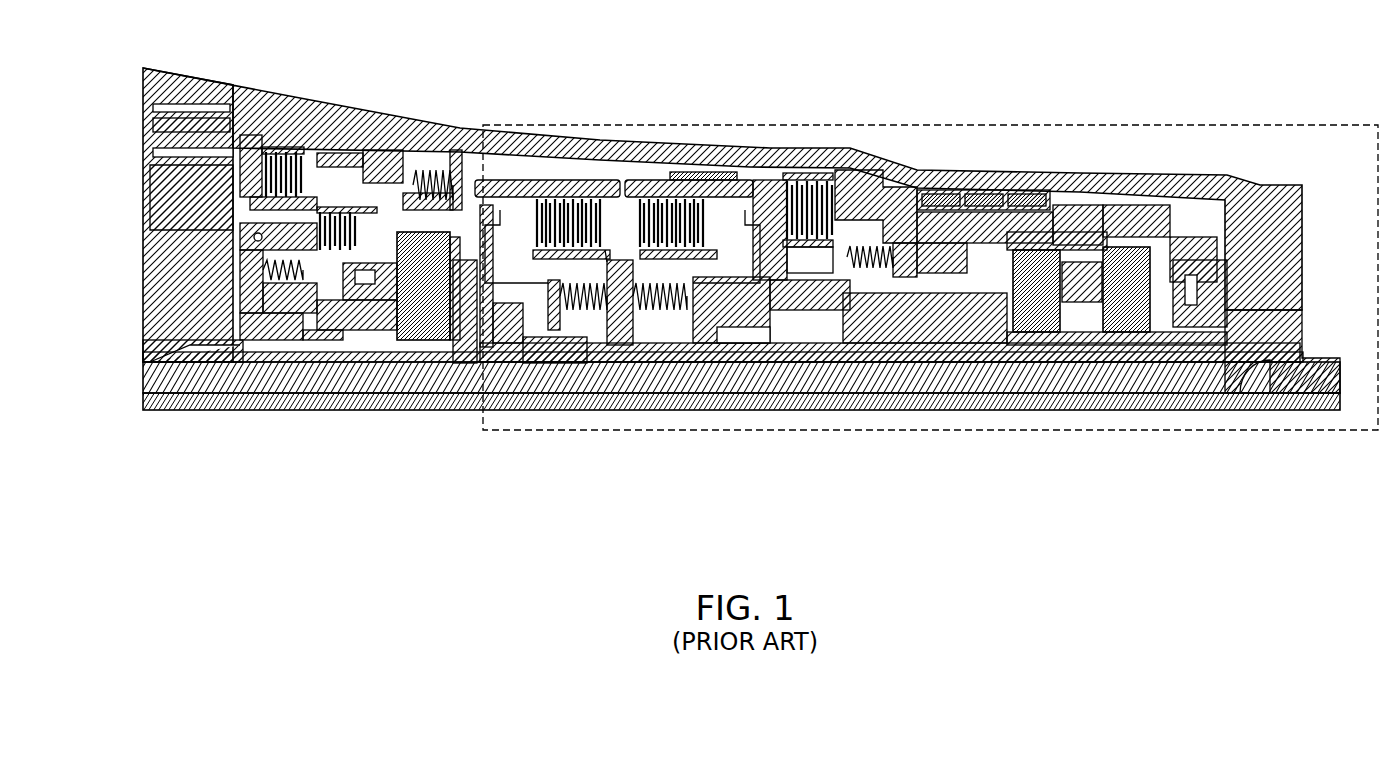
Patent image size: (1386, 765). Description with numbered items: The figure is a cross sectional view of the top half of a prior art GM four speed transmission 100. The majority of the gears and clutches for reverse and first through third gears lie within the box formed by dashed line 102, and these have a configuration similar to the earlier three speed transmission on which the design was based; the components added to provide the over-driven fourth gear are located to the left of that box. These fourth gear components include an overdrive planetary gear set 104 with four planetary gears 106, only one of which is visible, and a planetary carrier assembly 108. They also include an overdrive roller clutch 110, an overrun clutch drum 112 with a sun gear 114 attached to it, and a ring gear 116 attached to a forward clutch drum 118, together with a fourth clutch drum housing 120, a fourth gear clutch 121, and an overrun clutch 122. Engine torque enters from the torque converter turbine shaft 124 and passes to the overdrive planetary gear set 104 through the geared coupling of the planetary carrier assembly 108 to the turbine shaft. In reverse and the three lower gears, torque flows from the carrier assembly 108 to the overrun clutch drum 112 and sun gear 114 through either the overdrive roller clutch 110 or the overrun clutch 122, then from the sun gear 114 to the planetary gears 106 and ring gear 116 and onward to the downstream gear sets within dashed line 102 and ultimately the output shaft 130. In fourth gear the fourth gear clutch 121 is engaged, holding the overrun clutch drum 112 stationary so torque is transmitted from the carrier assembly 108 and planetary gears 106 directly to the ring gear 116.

The transmission 100 is at (706, 44).
The dashed line 102 is at (1374, 432).
The overdrive planetary gear set 104 is at (455, 380).
The planetary gears 106 is at (505, 385).
The planetary carrier assembly 108 is at (522, 385).
The overdrive roller clutch 110 is at (300, 300).
The overrun clutch drum 112 is at (388, 345).
The sun gear 114 is at (432, 378).
The ring gear 116 is at (425, 163).
The forward clutch drum 118 is at (570, 176).
The fourth clutch drum housing 120 is at (292, 150).
The fourth gear clutch 121 is at (256, 160).
The overrun clutch 122 is at (260, 222).
The torque converter turbine shaft 124 is at (162, 388).
The output shaft 130 is at (1322, 406).